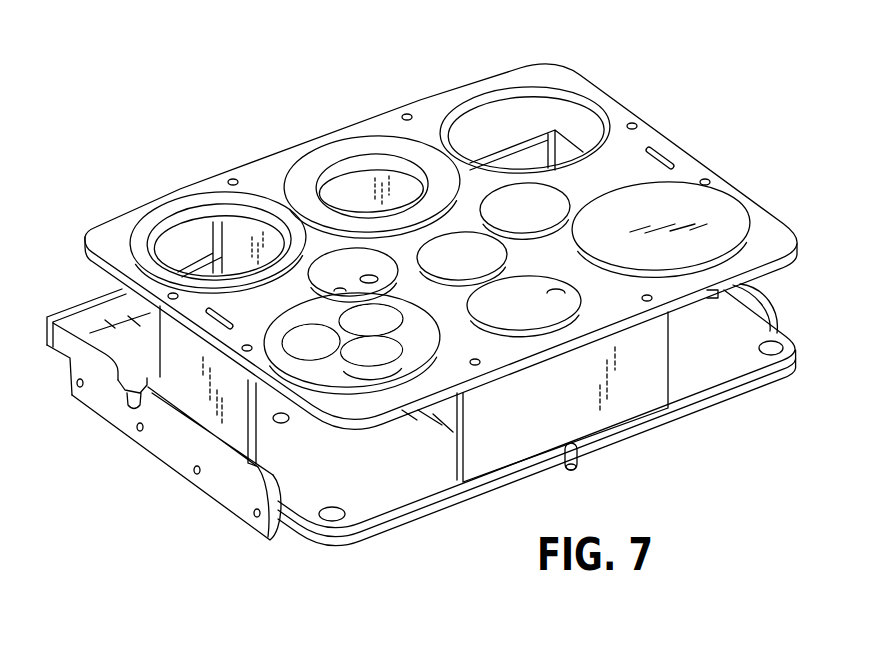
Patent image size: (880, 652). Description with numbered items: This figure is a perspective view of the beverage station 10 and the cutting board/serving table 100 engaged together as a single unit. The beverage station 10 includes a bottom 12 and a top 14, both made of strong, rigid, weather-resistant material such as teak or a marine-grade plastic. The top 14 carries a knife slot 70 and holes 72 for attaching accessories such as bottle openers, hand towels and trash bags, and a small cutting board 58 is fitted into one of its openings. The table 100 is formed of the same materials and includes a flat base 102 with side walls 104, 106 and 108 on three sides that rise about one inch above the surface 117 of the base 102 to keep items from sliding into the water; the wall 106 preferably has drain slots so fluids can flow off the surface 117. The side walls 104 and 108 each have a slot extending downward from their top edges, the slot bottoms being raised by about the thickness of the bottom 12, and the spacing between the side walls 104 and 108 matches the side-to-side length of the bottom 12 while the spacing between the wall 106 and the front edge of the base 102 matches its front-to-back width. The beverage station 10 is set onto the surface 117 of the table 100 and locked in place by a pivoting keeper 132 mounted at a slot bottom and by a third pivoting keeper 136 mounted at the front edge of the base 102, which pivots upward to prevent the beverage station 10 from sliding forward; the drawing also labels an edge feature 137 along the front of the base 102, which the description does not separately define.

The beverage station 10 is at (436, 323).
The bottom 12 is at (537, 459).
The top 14 is at (615, 82).
The small cutting board 58 is at (725, 205).
The knife slot 70 is at (668, 157).
The holes 72 is at (769, 349).
The cutting board/serving table 100 is at (155, 386).
The flat base 102 is at (692, 434).
The side wall 104 is at (213, 487).
The wall 106 is at (80, 305).
The side wall 108 is at (776, 300).
The surface 117 is at (403, 505).
The pivoting keeper 132 is at (143, 391).
The third pivoting keeper 136 is at (567, 445).
The lower edge 137 is at (431, 520).